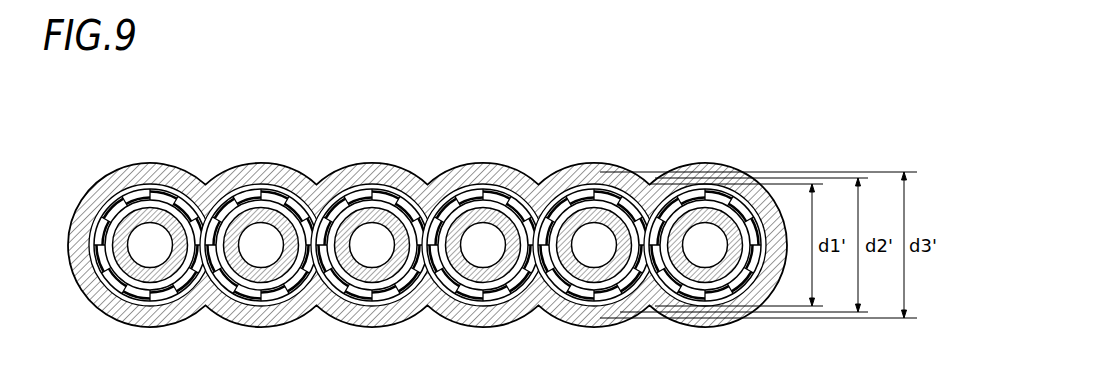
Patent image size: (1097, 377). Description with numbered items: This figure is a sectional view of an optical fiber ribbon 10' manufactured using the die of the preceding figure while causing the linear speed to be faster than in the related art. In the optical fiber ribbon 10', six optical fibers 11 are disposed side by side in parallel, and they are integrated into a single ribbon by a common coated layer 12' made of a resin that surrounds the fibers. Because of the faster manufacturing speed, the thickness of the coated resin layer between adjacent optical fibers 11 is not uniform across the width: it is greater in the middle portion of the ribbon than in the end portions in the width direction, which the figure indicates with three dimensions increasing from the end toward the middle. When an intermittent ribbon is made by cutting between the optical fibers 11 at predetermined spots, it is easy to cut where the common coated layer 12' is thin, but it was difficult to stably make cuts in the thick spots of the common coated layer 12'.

The optical fiber ribbon 10' is at (416, 207).
The optical fiber 11 is at (111, 204).
The common coated layer 12' is at (416, 249).